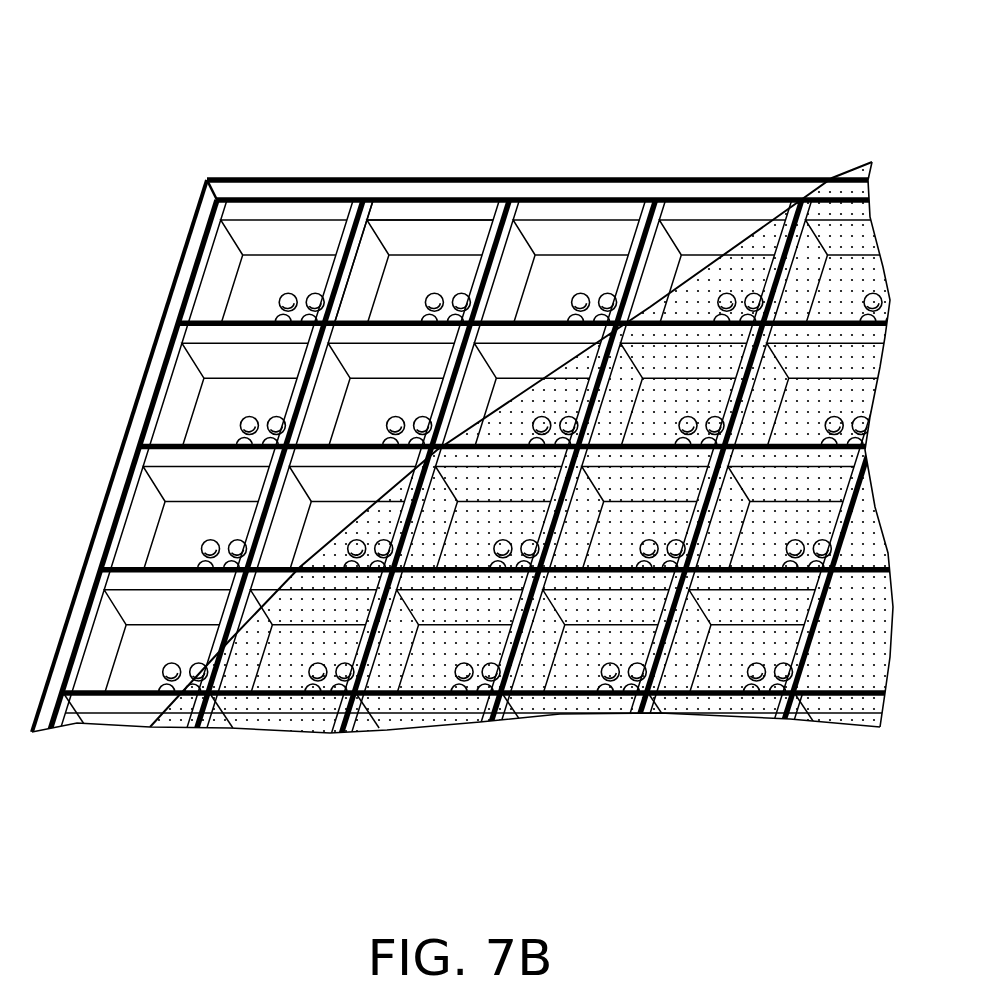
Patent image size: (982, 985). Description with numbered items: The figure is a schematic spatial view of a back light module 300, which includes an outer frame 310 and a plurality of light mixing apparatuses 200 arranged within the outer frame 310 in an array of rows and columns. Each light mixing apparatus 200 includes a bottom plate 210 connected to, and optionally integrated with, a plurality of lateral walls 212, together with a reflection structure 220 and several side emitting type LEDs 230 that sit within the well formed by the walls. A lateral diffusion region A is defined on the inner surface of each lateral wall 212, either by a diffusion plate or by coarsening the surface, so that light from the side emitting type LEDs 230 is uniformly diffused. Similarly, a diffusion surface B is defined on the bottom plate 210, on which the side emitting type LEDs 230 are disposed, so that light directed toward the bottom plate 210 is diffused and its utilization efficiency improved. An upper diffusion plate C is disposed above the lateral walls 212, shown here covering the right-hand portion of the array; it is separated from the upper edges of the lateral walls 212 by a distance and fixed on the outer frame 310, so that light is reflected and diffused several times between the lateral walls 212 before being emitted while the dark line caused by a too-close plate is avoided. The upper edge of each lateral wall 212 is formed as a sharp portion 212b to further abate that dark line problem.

The light mixing apparatus 200 is at (490, 395).
The bottom plate 210 is at (473, 267).
The lateral wall 212 is at (488, 203).
The sharp portion 212b is at (348, 242).
The reflection structure 220 is at (381, 253).
The side emitting type LED 230 is at (462, 292).
The back light module 300 is at (884, 788).
The outer frame 310 is at (685, 193).
The lateral diffusion region A is at (365, 231).
The diffusion surface B is at (427, 271).
The upper diffusion plate C is at (778, 203).